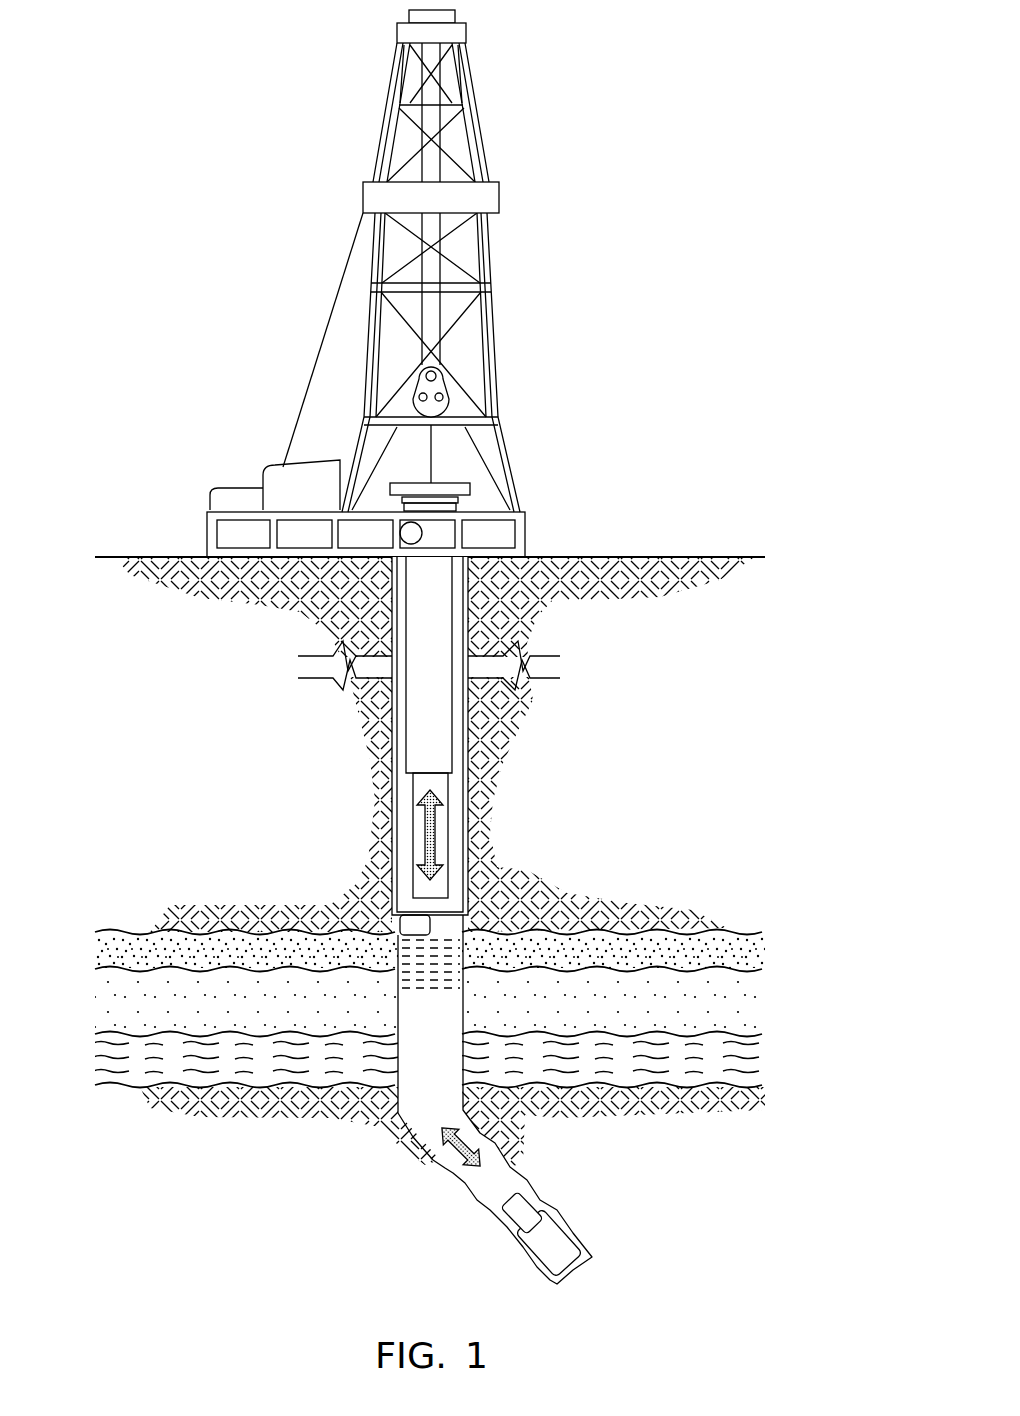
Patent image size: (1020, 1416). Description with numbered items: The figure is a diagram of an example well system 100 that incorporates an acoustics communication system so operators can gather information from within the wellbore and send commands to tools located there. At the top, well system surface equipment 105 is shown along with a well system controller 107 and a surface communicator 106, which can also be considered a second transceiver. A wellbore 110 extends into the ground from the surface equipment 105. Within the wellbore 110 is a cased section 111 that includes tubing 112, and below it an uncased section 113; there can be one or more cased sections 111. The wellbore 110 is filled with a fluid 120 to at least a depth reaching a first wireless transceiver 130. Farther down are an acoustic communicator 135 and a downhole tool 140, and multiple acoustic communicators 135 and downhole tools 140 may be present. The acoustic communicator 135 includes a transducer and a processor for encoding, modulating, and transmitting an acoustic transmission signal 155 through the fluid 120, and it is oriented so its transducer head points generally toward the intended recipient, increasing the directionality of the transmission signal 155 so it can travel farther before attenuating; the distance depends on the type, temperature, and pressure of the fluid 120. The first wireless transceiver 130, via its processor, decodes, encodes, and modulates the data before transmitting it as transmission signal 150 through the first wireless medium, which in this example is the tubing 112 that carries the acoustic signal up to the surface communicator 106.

The well system 100 is at (162, 132).
The well system surface equipment 105 is at (503, 333).
The surface communicator 106 is at (423, 527).
The well system controller 107 is at (383, 535).
The wellbore 110 is at (470, 718).
The cased section 111 is at (467, 818).
The tubing 112 is at (448, 888).
The uncased section 113 is at (427, 1070).
The fluid 120 is at (425, 973).
The first wireless transceiver 130 is at (400, 928).
The acoustic communicator 135 is at (540, 1200).
The downhole tool 140 is at (573, 1265).
The transmission signal 150 is at (420, 826).
The transmission signal 155 is at (453, 1157).